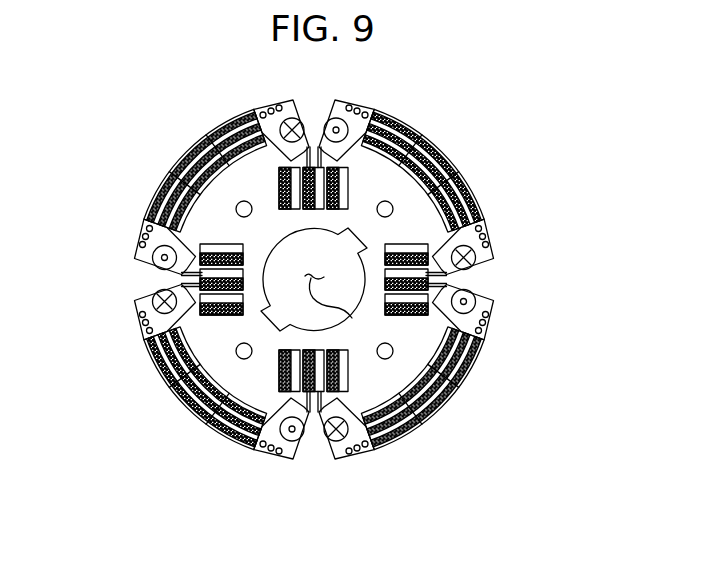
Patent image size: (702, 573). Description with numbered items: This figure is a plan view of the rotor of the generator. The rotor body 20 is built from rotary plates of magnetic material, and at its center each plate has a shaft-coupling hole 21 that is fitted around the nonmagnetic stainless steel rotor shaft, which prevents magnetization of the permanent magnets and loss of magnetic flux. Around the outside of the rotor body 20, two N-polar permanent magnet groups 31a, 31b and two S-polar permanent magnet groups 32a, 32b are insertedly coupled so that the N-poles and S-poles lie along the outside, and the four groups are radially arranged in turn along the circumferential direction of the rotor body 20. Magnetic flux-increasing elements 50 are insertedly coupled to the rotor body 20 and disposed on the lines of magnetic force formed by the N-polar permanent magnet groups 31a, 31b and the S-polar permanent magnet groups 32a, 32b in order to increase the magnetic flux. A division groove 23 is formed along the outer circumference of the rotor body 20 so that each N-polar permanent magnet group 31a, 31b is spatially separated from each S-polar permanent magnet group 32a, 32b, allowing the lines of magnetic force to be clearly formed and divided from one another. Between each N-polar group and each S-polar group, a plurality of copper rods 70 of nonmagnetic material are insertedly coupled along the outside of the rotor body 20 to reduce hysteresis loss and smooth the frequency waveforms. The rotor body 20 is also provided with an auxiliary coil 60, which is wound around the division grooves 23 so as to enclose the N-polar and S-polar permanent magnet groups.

The rotor body 20 is at (318, 326).
The shaft-coupling hole 21 is at (352, 318).
The division groove 23 is at (312, 446).
The N-polar permanent magnet group 31a is at (187, 156).
The N-polar permanent magnet group 31b is at (447, 408).
The S-polar permanent magnet group 32a is at (438, 157).
The S-polar permanent magnet group 32b is at (190, 404).
The magnetic flux-increasing element 50 is at (217, 274).
The auxiliary coil 60 is at (473, 293).
The copper rod 70 is at (141, 320).